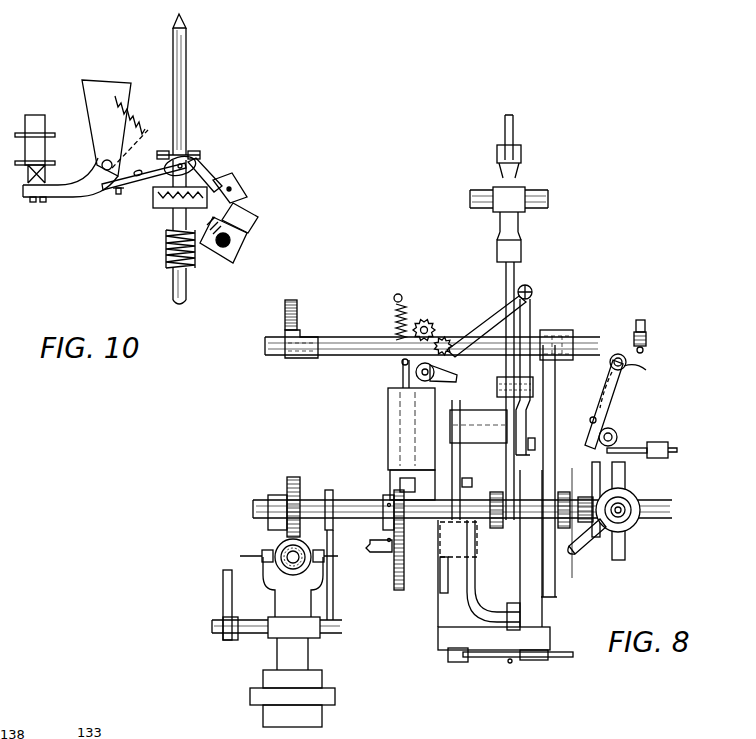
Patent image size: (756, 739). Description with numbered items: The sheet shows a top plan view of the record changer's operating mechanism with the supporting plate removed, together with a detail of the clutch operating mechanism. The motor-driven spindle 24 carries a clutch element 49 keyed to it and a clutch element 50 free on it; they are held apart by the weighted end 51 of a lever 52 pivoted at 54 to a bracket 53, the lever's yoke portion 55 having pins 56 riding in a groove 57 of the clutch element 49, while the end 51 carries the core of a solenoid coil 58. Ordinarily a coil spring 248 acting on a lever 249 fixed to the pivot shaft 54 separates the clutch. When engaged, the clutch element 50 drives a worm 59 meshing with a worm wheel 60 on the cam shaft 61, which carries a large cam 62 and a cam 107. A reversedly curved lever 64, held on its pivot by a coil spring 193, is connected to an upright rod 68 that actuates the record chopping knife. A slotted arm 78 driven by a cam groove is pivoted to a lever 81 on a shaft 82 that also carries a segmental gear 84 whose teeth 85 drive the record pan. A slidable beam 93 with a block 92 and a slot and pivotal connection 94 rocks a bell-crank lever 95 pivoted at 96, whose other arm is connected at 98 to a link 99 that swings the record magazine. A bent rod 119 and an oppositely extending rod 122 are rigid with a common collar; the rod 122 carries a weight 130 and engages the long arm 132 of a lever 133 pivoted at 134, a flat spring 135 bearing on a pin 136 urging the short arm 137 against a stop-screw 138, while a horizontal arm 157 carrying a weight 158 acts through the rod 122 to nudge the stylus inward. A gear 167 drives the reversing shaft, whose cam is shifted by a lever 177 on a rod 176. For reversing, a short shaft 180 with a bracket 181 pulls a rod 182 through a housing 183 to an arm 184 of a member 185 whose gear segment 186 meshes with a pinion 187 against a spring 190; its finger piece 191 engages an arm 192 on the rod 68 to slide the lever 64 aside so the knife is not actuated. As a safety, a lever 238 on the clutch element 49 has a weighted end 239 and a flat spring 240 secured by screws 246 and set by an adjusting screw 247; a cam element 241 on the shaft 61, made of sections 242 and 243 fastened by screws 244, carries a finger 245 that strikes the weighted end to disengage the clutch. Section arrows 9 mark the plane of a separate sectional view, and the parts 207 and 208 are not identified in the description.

In FIG. 10, the spindle 24 is at (188, 72).
In FIG. 8, the spindle 24 is at (290, 560).
In FIG. 10, the clutch element 49 is at (158, 193).
In FIG. 8, the clutch element 49 is at (280, 545).
In FIG. 10, the clutch element 50 is at (160, 207).
In FIG. 10, the weighted end 51 is at (28, 196).
In FIG. 10, the lever 52 is at (65, 198).
In FIG. 8, the lever 52 is at (277, 652).
In FIG. 10, the bracket 53 is at (95, 100).
In FIG. 10, the pivot 54 is at (104, 162).
In FIG. 8, the pivot 54 is at (343, 624).
In FIG. 8, the yoke portion 55 is at (318, 578).
In FIG. 8, the fingers or pins 56 is at (268, 554).
In FIG. 10, the groove 57 is at (196, 160).
In FIG. 10, the solenoid coil 58 is at (48, 150).
In FIG. 8, the solenoid coil 58 is at (312, 717).
In FIG. 10, the worm 59 is at (168, 260).
In FIG. 8, the worm wheel 60 is at (290, 478).
In FIG. 10, the cam and driven shaft 61 is at (218, 245).
In FIG. 8, the cam and driven shaft 61 is at (353, 498).
In FIG. 8, the large cam 62 is at (544, 610).
In FIG. 8, the reversedly curved lever 64 is at (531, 408).
In FIG. 8, the upright rod 68 is at (533, 292).
In FIG. 8, the arm 78 is at (556, 420).
In FIG. 8, the lever 81 is at (568, 332).
In FIG. 8, the shaft 82 is at (350, 336).
In FIG. 8, the segmental gear 84 is at (303, 330).
In FIG. 8, the teeth 85 is at (291, 300).
In FIG. 8, the block or enlarged portion 92 is at (472, 410).
In FIG. 8, the slidable beam 93 is at (515, 273).
In FIG. 8, the pivotal connection 94 is at (524, 250).
In FIG. 8, the bell-crank lever 95 is at (519, 225).
In FIG. 8, the pivot 96 is at (526, 196).
In FIG. 8, the pivot 98 is at (524, 156).
In FIG. 8, the link 99 is at (514, 128).
In FIG. 8, the cam 107 is at (628, 545).
In FIG. 8, the bent rod 119 is at (594, 552).
In FIG. 8, the rod 122 is at (628, 456).
In FIG. 8, the weight or block 130 is at (617, 434).
In FIG. 8, the long arm 132 is at (598, 414).
In FIG. 8, the lever 133 is at (604, 390).
In FIG. 8, the pivot 134 is at (645, 370).
In FIG. 8, the flat spring 135 is at (612, 392).
In FIG. 8, the pin 136 is at (590, 423).
In FIG. 8, the short arm 137 is at (630, 366).
In FIG. 8, the stop-screw 138 is at (643, 320).
In FIG. 8, the horizontal arm 157 is at (678, 450).
In FIG. 8, the weight 158 is at (660, 442).
In FIG. 8, the gear 167 is at (402, 590).
In FIG. 8, the rod or shaft 176 is at (450, 636).
In FIG. 8, the lever 177 is at (490, 660).
In FIG. 8, the short shaft 180 is at (462, 478).
In FIG. 8, the bracket 181 is at (392, 482).
In FIG. 8, the rod 182 is at (403, 379).
In FIG. 8, the housing 183 is at (388, 420).
In FIG. 8, the arm 184 is at (401, 362).
In FIG. 8, the member 185 is at (426, 327).
In FIG. 8, the gear segment 186 is at (446, 340).
In FIG. 8, the pinion 187 is at (420, 322).
In FIG. 8, the spring 190 is at (397, 295).
In FIG. 8, the finger piece 191 is at (448, 374).
In FIG. 8, the arm 192 is at (487, 330).
In FIG. 8, the coil spring 193 is at (502, 396).
In FIG. 8, the bracket 207 is at (466, 492).
In FIG. 8, the pipe 208 is at (495, 610).
In FIG. 10, the lever 238 is at (208, 178).
In FIG. 8, the lever 238 is at (334, 600).
In FIG. 10, the weighted end 239 is at (240, 192).
In FIG. 8, the weighted end 239 is at (329, 490).
In FIG. 10, the flat spring 240 is at (100, 186).
In FIG. 10, the finger or cam element 241 is at (256, 247).
In FIG. 10, the section 242 is at (235, 258).
In FIG. 10, the section 243 is at (245, 218).
In FIG. 10, the screws 244 is at (226, 262).
In FIG. 10, the finger 245 is at (258, 232).
In FIG. 10, the screws 246 is at (140, 170).
In FIG. 10, the adjusting screw 247 is at (118, 195).
In FIG. 10, the coil spring 248 is at (130, 116).
In FIG. 8, the coil spring 248 is at (222, 573).
In FIG. 10, the lever 249 is at (140, 134).
In FIG. 8, the lever 249 is at (222, 582).
In FIG. 8, the section line 9 is at (582, 470).